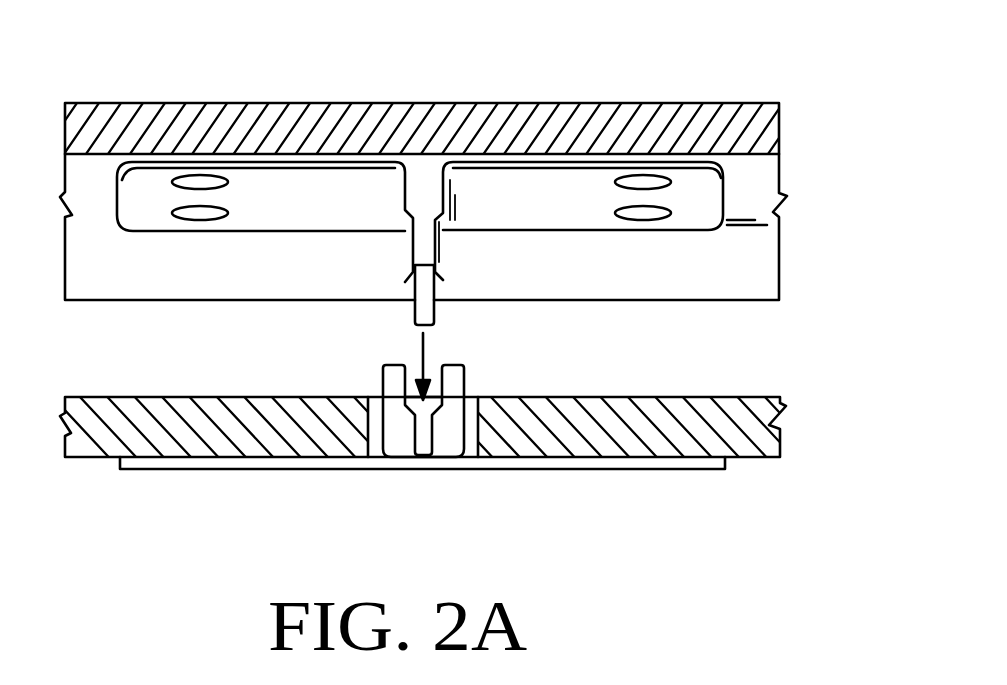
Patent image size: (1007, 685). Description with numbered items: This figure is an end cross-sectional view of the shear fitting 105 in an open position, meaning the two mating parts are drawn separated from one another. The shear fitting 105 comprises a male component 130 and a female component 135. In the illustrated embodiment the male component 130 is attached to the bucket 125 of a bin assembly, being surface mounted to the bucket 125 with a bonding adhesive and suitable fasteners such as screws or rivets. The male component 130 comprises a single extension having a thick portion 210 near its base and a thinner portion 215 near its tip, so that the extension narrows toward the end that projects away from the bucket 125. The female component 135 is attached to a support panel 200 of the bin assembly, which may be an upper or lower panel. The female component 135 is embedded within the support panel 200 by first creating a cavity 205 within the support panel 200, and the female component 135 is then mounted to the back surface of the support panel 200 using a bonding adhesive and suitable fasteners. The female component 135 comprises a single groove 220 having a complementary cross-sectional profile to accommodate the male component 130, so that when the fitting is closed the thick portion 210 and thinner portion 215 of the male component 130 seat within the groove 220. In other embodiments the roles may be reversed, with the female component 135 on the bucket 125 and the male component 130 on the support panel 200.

The shear fitting 105 is at (753, 64).
The bucket 125 is at (767, 245).
The male component 130 is at (593, 224).
The female component 135 is at (623, 472).
The support panel 200 is at (762, 432).
The cavity 205 is at (470, 405).
The thick portion 210 is at (420, 193).
The thinner portion 215 is at (421, 251).
The groove 220 is at (413, 373).